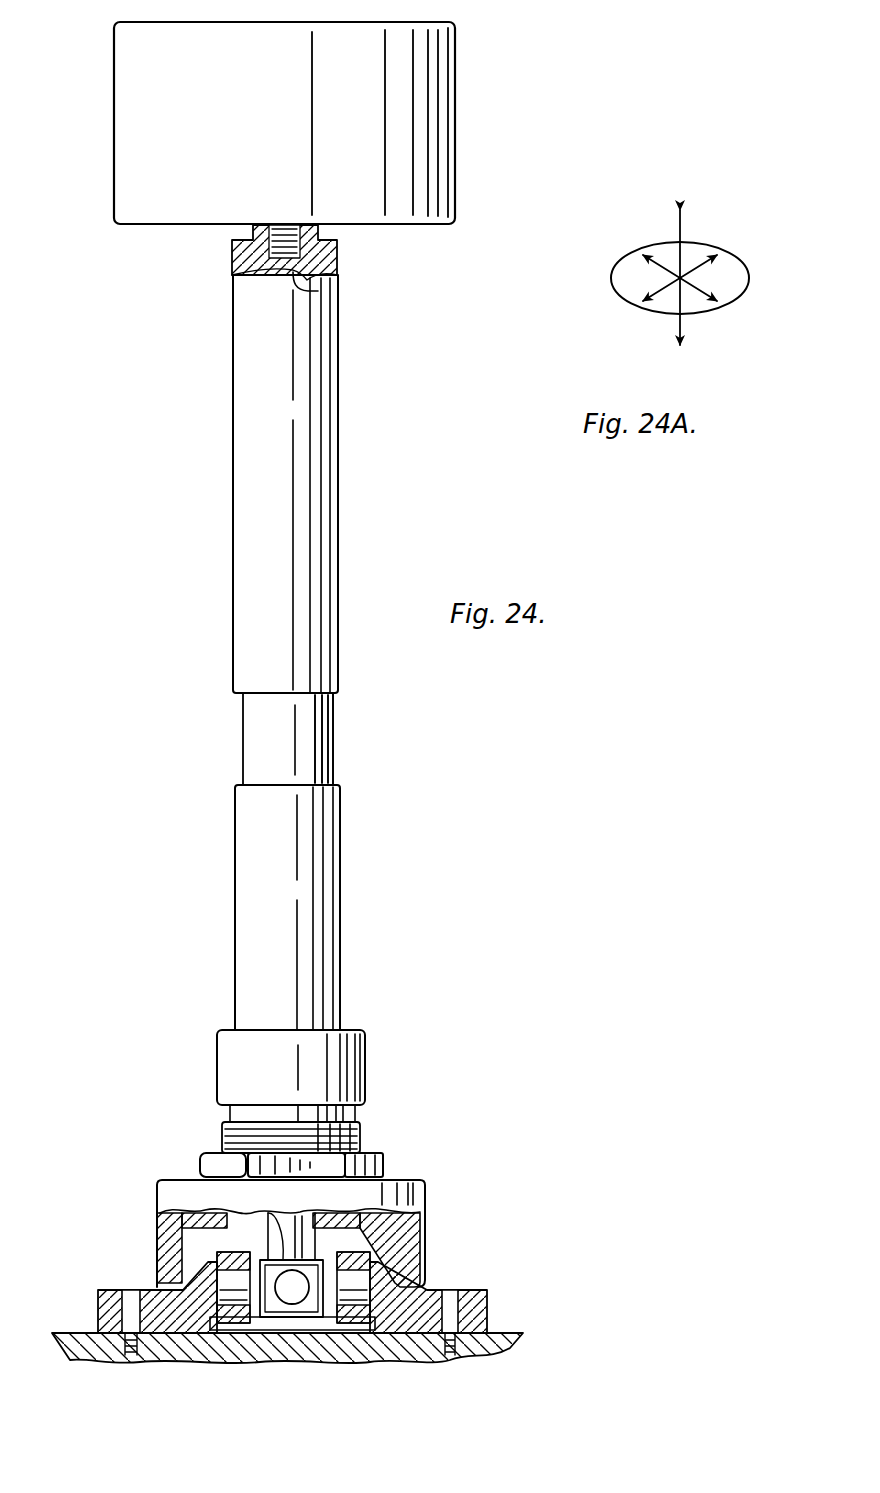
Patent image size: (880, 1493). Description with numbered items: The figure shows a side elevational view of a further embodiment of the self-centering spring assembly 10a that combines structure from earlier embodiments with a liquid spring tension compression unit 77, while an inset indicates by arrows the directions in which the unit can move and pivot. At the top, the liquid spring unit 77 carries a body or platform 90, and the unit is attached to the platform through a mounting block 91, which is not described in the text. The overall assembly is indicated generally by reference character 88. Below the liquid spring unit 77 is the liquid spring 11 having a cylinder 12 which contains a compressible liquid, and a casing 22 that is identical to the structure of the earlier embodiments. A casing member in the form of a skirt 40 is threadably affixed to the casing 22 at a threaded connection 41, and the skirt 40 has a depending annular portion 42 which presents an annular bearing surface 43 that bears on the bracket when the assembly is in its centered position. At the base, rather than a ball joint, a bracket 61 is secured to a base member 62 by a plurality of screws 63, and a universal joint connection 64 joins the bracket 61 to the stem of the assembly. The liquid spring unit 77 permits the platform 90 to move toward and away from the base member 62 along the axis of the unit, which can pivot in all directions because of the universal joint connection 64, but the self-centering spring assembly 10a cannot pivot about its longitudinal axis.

The body or platform 90 is at (142, 138).
The motor mounting block 91 is at (318, 291).
The liquid spring tension compression unit 77 is at (250, 487).
The actuator assembly 88 is at (395, 502).
The cylinder 12 is at (262, 721).
The liquid spring 11 is at (338, 728).
The self-centering spring assembly 10a is at (368, 848).
The casing 22 is at (250, 945).
The threaded connection 41 is at (383, 1166).
The skirt 40 is at (425, 1183).
The depending annular portion 42 is at (425, 1219).
The annular bearing surface 43 is at (157, 1281).
The screws 63 is at (130, 1290).
The universal joint connection 64 is at (275, 1265).
The bracket 61 is at (487, 1305).
The base member 62 is at (507, 1340).